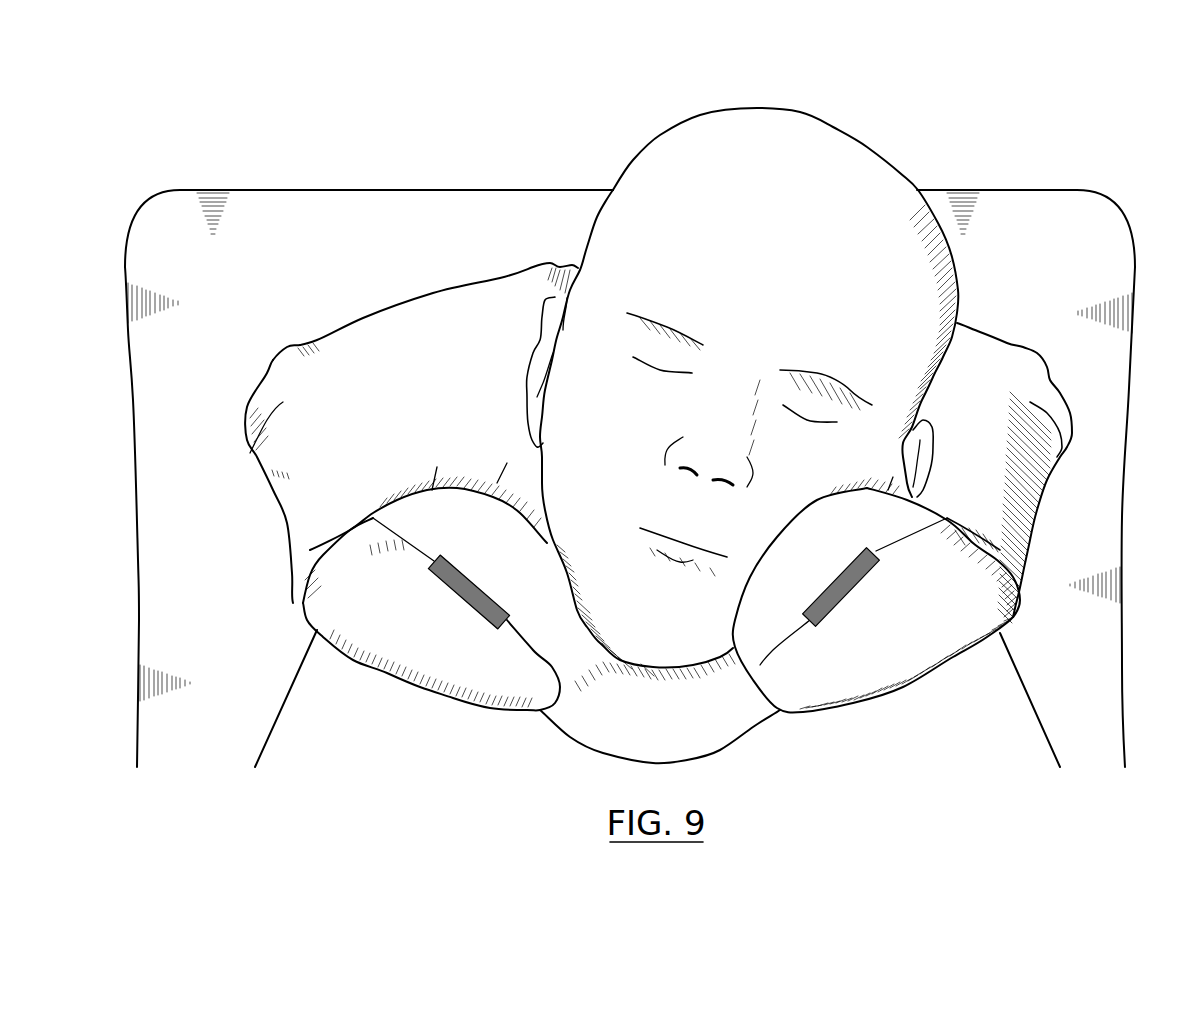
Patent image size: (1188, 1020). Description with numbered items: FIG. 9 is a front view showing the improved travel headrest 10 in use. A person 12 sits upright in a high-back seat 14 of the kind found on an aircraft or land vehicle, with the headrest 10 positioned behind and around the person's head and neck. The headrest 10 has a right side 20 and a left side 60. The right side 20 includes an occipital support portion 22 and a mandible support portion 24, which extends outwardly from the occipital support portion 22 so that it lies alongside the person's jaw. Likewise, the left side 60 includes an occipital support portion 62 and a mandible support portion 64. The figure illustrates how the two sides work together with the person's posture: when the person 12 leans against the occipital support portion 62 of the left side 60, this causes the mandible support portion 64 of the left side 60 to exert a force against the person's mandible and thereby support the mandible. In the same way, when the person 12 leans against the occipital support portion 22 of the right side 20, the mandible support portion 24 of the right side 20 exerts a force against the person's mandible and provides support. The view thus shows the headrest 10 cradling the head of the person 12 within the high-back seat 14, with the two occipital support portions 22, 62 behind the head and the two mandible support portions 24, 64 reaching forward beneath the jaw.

The travel headrest 10 is at (248, 150).
The person 12 is at (668, 163).
The high-back seat 14 is at (415, 213).
The right side 20 is at (363, 322).
The occipital support portion 22 is at (488, 340).
The mandible support portion 24 is at (380, 640).
The left side 60 is at (1037, 510).
The occipital support portion 62 is at (973, 353).
The mandible support portion 64 is at (873, 630).